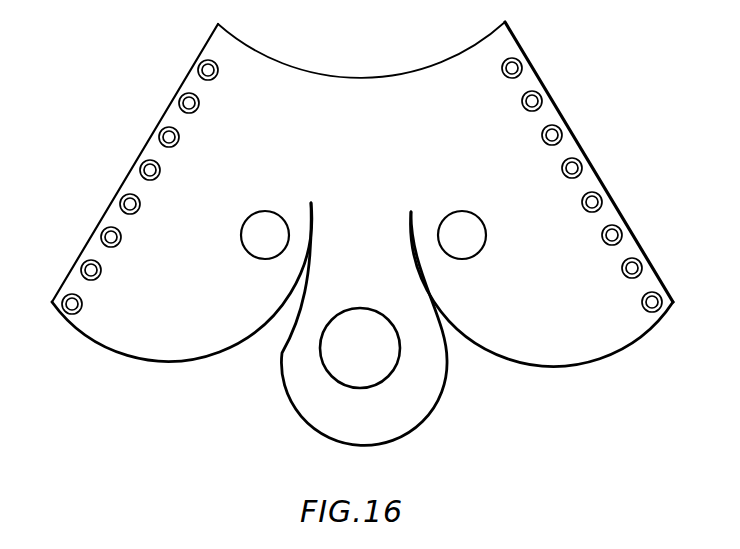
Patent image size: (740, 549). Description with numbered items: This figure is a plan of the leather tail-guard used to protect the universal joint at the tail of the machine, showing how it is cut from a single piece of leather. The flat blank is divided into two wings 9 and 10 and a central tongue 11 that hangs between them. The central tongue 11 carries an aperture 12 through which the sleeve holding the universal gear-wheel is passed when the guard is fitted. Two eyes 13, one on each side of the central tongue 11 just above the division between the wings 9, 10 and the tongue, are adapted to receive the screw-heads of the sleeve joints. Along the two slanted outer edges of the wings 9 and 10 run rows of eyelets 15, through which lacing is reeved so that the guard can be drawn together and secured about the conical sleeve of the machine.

The wing 9 is at (156, 359).
The wing 10 is at (585, 367).
The central tongue 11 is at (364, 324).
The aperture 12 is at (360, 348).
The eyes 13 is at (363, 235).
The eyelets 15 is at (157, 133).